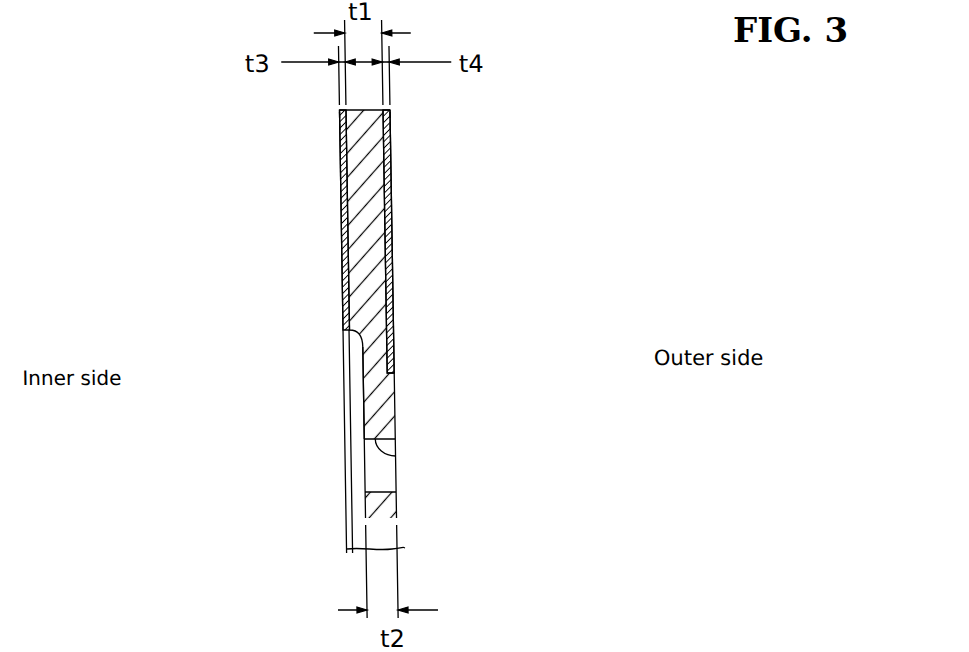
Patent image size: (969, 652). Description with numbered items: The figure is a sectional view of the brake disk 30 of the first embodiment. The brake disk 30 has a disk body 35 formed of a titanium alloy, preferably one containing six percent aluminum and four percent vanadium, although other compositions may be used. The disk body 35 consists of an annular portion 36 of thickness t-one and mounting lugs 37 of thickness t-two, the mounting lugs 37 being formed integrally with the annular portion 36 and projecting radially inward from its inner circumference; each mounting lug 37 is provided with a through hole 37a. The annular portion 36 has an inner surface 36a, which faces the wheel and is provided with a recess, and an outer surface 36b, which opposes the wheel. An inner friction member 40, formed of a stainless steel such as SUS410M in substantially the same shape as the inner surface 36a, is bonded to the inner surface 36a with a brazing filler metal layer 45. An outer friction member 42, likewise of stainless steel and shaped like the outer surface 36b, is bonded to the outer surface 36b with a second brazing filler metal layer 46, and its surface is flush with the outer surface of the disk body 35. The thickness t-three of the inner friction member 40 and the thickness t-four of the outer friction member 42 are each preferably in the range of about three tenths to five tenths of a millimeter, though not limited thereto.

The brake disk 30 is at (548, 91).
The disk body 35 is at (218, 272).
The annular portion 36 is at (358, 257).
The inner surface 36a is at (339, 143).
The outer surface 36b is at (391, 146).
The mounting lugs 37 is at (360, 419).
The through hole 37a is at (390, 456).
The inner friction member 40 is at (342, 206).
The outer friction member 42 is at (391, 211).
The brazing filler metal layer 45 is at (339, 123).
The second brazing filler metal layer 46 is at (391, 119).